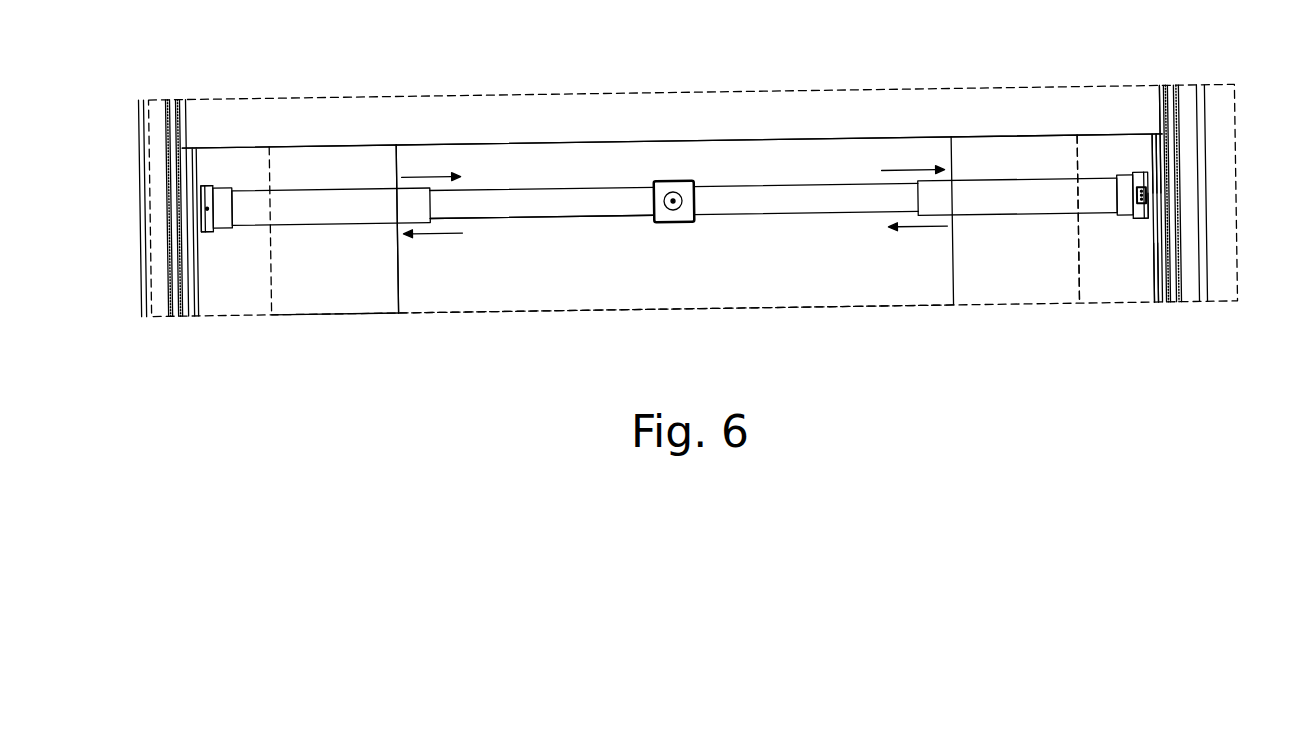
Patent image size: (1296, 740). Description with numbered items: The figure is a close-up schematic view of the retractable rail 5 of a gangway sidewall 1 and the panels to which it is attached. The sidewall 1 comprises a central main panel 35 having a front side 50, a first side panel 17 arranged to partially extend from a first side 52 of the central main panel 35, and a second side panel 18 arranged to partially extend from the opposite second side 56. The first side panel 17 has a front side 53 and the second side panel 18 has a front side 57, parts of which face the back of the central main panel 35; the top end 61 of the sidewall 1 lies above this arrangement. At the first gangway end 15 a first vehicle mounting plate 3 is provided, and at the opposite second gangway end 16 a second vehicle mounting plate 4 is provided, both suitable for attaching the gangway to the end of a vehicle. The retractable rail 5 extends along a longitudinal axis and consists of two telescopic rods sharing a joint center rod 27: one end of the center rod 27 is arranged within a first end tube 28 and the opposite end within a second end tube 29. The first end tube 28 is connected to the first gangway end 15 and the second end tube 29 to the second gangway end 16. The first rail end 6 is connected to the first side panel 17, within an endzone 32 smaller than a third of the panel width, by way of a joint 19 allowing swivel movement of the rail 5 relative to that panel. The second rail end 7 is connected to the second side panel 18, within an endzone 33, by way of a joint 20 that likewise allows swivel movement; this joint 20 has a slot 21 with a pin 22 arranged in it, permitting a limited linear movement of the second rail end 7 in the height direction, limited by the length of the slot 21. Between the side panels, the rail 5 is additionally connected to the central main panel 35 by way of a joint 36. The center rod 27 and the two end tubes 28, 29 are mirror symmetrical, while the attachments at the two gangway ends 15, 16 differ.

The sidewall 1 is at (878, 141).
The first vehicle mounting plate 3 is at (140, 200).
The second vehicle mounting plate 4 is at (1207, 302).
The retractable rail 5 is at (490, 197).
The first rail end 6 is at (207, 187).
The second rail end 7 is at (1143, 178).
The first gangway end 15 is at (197, 172).
The second gangway end 16 is at (1147, 287).
The first side panel 17 is at (303, 158).
The second side panel 18 is at (975, 148).
The joint 19 is at (200, 235).
The joint 20 is at (1143, 222).
The slot 21 is at (1160, 132).
The pin 22 is at (1146, 196).
The center rod 27 is at (495, 210).
The first end tube 28 is at (325, 223).
The second end tube 29 is at (970, 205).
The endzone 32 is at (255, 298).
The endzone 33 is at (1100, 148).
The central main panel 35 is at (698, 153).
The joint 36 is at (675, 208).
The front side 50 is at (858, 293).
The first side 52 is at (393, 300).
The front side 53 is at (308, 297).
The second side 56 is at (952, 287).
The front side 57 is at (1052, 282).
The top end 61 is at (413, 142).